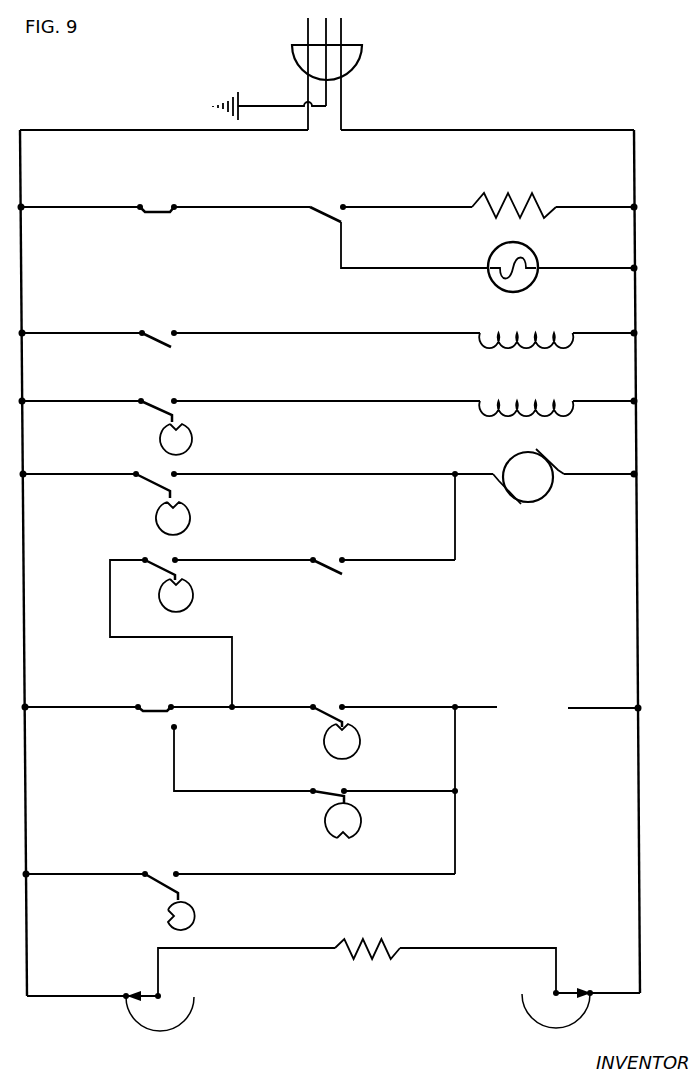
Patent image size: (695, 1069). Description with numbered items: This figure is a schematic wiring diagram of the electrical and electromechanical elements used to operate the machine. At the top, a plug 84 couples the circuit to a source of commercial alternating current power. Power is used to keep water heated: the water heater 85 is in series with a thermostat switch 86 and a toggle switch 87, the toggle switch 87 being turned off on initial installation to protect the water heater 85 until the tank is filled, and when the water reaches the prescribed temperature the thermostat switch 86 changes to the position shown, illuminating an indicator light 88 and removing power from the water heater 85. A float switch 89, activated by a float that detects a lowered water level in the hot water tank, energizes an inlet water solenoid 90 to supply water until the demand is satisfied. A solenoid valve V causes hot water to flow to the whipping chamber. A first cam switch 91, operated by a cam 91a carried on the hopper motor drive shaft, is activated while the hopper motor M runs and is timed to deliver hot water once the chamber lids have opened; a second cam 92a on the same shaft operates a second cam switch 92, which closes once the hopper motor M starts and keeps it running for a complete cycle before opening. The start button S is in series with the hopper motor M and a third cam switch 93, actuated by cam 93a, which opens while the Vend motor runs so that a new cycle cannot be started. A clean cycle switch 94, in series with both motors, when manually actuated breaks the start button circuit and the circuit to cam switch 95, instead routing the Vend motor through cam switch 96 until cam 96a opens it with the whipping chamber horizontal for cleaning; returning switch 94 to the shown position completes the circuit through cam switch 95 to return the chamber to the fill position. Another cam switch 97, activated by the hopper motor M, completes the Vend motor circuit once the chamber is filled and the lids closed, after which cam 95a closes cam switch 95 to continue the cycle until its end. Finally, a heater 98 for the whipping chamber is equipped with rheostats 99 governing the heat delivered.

The plug 84 is at (358, 52).
The water heater 85 is at (540, 215).
The thermostat switch 86 is at (325, 218).
The toggle switch 87 is at (157, 215).
The indicator light 88 is at (530, 263).
The float switch 89 is at (156, 342).
The inlet water solenoid 90 is at (481, 344).
The first cam switch 91 is at (163, 400).
The cam 91a is at (191, 437).
The second cam switch 92 is at (152, 472).
The second cam 92a is at (189, 516).
The third cam switch 93 is at (153, 558).
The cam 93a is at (192, 594).
The clean cycle switch 94 is at (155, 700).
The cam switch 95 is at (328, 706).
The cam 95a is at (358, 738).
The cam switch 96 is at (327, 788).
The cam 96a is at (360, 824).
The cam switch 97 is at (159, 875).
The heater 98 is at (367, 966).
The rheostats 99 is at (152, 1018).
The hopper motor M is at (535, 492).
The solenoid valve V is at (574, 407).
The start button S is at (330, 578).